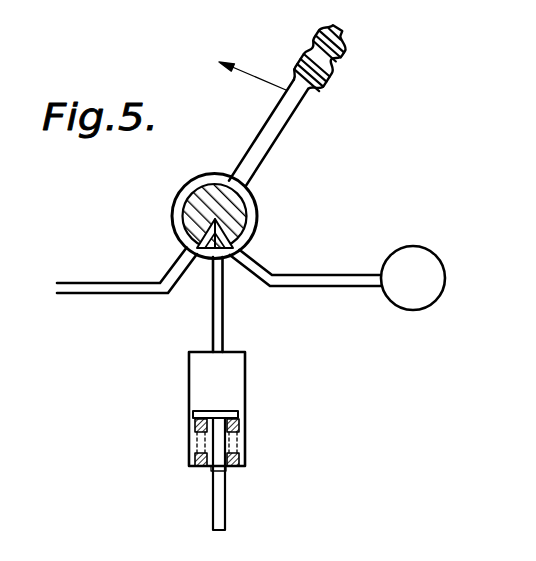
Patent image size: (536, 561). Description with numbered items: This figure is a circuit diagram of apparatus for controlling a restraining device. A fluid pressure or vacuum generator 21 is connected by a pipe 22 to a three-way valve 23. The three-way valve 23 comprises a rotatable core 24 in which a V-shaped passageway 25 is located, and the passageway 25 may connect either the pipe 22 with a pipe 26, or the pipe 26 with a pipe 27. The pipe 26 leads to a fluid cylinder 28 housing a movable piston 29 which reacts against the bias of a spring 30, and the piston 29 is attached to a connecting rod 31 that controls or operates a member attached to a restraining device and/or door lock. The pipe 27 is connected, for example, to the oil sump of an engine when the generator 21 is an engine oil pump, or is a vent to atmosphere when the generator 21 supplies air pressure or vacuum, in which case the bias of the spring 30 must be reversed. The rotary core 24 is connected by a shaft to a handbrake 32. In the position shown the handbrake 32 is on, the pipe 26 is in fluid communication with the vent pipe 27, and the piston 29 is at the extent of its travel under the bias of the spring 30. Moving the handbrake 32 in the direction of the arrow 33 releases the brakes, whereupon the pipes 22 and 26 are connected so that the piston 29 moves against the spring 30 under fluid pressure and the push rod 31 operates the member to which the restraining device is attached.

The fluid pressure or vacuum generator 21 is at (419, 265).
The pipe 22 is at (259, 258).
The three-way valve 23 is at (258, 213).
The rotatable core 24 is at (202, 182).
The passageway 25 is at (205, 216).
The pipe 26 is at (213, 323).
The pipe 27 is at (172, 267).
The fluid cylinder 28 is at (246, 363).
The movable piston 29 is at (194, 412).
The spring 30 is at (238, 428).
The connecting rod 31 is at (225, 490).
The handbrake 32 is at (295, 107).
The arrow 33 is at (228, 65).